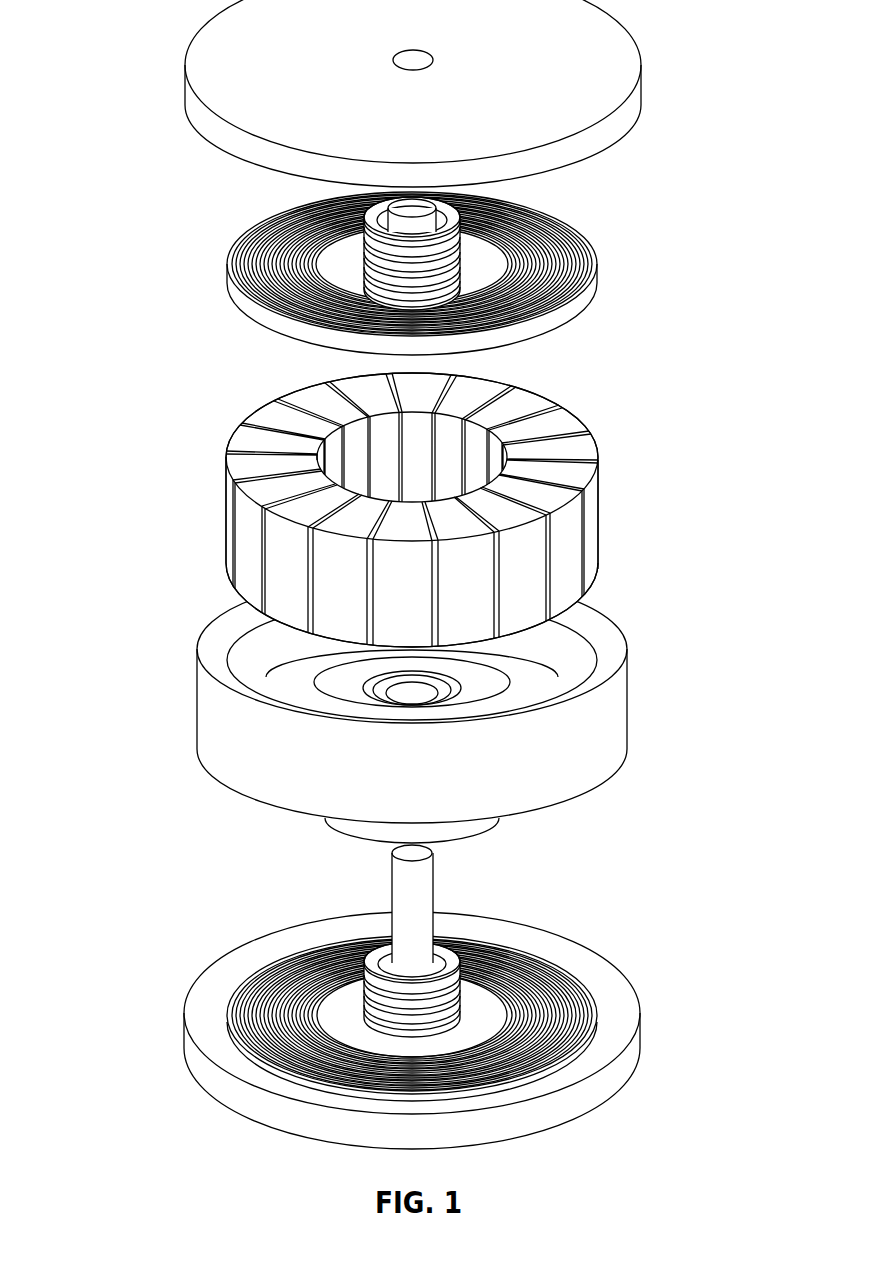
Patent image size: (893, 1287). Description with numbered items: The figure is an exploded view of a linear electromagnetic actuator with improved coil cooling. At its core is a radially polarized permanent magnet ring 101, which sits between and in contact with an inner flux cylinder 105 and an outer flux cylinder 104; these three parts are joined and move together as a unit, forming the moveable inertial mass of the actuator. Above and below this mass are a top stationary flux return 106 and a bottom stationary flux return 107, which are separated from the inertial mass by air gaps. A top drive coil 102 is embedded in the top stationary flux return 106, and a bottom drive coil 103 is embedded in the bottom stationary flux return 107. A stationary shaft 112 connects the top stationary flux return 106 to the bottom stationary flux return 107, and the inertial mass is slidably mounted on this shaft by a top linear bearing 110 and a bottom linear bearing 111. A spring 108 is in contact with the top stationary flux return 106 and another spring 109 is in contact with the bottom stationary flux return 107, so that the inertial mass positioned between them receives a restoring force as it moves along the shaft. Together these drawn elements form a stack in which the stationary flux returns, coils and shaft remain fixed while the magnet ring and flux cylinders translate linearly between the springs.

The radially polarized permanent magnet ring 101 is at (590, 490).
The top drive coil 102 is at (587, 298).
The bottom drive coil 103 is at (260, 997).
The outer flux cylinder 104 is at (210, 612).
The inner flux cylinder 105 is at (453, 830).
The top stationary flux return 106 is at (633, 100).
The bottom stationary flux return 107 is at (193, 1058).
The spring 108 is at (453, 257).
The spring 109 is at (455, 988).
The top linear bearing 110 is at (392, 226).
The bottom linear bearing 111 is at (383, 965).
The stationary shaft 112 is at (405, 882).